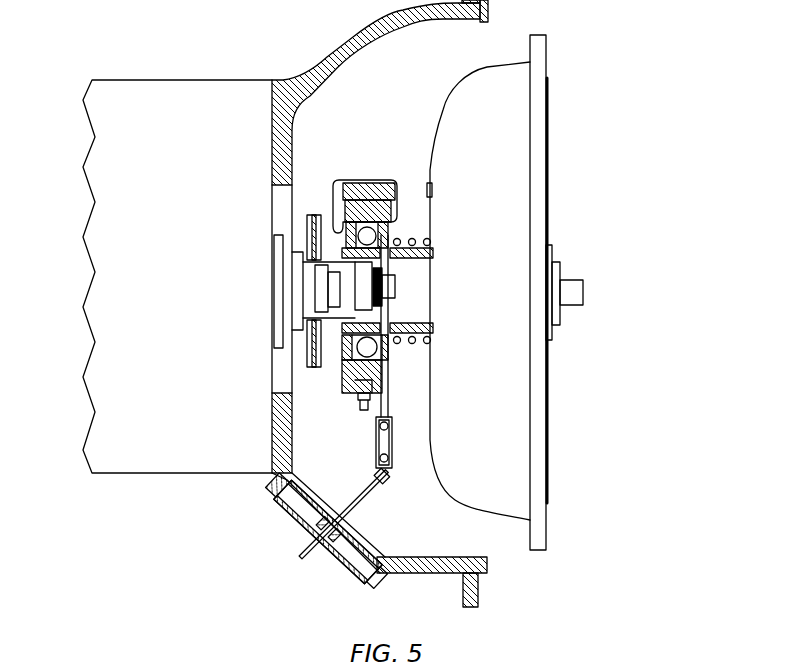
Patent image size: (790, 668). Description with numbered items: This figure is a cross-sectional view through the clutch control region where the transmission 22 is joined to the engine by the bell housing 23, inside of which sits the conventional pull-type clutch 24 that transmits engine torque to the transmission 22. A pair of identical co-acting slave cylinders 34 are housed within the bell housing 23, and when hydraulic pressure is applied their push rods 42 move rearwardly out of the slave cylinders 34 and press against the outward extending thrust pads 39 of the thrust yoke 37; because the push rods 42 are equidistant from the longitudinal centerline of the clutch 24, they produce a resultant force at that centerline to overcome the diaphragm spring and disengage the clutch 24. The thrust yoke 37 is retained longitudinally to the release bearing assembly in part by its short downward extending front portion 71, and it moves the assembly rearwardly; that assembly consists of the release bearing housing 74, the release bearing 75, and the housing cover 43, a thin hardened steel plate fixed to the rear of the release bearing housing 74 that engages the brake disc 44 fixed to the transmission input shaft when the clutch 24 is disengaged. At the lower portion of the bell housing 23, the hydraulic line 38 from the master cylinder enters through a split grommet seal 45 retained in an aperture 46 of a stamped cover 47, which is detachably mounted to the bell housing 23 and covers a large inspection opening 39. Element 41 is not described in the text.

The transmission 22 is at (137, 473).
The bell housing 23 is at (347, 55).
The pull-type clutch 24 is at (548, 110).
The slave cylinders 34 is at (397, 295).
The thrust yoke 37 is at (352, 180).
The hydraulic line 38 is at (367, 483).
The thrust pads / opening 39 is at (315, 282).
The link 41 is at (392, 443).
The push rods 42 is at (328, 293).
The housing cover 43 is at (342, 378).
The brake disc 44 is at (307, 225).
The split grommet seal 45 is at (337, 557).
The aperture 46 is at (322, 550).
The stamped cover 47 is at (307, 512).
The front portion 71 is at (430, 185).
The release bearing housing 74 is at (367, 182).
The release bearing 75 is at (373, 200).